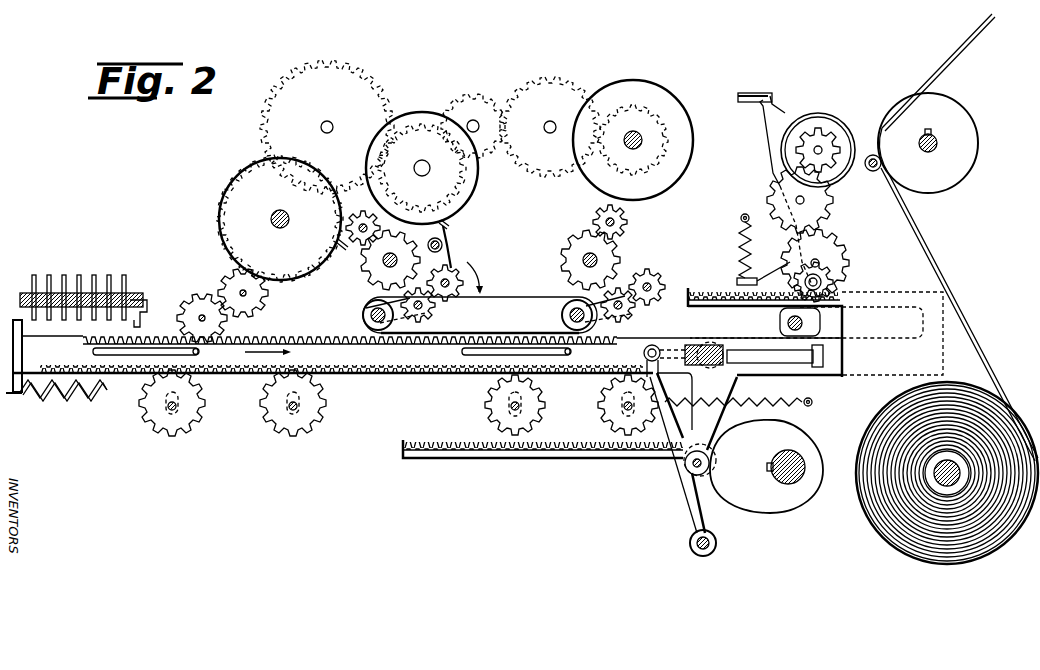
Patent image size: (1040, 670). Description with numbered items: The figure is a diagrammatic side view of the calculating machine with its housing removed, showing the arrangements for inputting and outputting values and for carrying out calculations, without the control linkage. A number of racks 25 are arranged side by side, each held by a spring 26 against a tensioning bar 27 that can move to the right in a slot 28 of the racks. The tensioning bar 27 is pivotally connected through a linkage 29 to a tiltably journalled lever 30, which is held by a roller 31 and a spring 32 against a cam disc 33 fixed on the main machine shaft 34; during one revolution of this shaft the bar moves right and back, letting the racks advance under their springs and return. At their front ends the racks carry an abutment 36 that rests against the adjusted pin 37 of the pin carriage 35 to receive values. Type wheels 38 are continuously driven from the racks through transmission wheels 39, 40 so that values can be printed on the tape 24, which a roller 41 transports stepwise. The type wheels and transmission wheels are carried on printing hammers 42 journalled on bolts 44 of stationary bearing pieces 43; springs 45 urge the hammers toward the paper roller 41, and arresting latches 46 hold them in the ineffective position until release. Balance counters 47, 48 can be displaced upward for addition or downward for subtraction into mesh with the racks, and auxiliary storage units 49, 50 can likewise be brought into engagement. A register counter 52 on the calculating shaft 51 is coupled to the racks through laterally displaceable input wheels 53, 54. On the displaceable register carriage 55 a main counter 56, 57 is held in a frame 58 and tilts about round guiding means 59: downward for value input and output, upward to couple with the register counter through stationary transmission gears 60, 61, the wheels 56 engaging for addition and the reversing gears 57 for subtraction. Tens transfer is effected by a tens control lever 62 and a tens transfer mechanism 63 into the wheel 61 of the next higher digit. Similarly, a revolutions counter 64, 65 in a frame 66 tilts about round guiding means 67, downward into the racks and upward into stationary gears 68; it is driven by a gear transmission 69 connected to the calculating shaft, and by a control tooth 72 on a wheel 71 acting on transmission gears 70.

The tape 24 is at (943, 62).
The racks 25 is at (380, 370).
The spring 26 is at (73, 397).
The tensioning bar 27 is at (716, 345).
The slot 28 is at (810, 366).
The linkage 29 is at (663, 345).
The lever 30 is at (685, 491).
The roller 31 is at (703, 480).
The spring 32 is at (791, 406).
The cam disc 33 is at (790, 506).
The main machine shaft 34 is at (806, 461).
The pin carriage 35 is at (63, 288).
The abutment 36 is at (15, 318).
The pin 37 is at (144, 300).
The type wheels 38 is at (833, 126).
The transmission wheel 39 is at (771, 195).
The transmission wheel 40 is at (846, 258).
The roller 41 is at (961, 137).
The printing hammers 42 is at (768, 126).
The bearing pieces 43 is at (788, 322).
The bolts 44 is at (836, 286).
The springs 45 is at (742, 241).
The arresting latches 46 is at (758, 92).
The balance counter 47 is at (492, 404).
The balance counter 48 is at (605, 404).
The auxiliary storage unit 49 is at (318, 403).
The auxiliary storage unit 50 is at (197, 403).
The calculating shaft 51 is at (272, 212).
The register counter 52 is at (253, 168).
The input wheel 53 is at (200, 300).
The input wheel 54 is at (265, 295).
The register carriage 55 is at (501, 300).
The main counter wheels 56 is at (436, 313).
The reversing gears 57 is at (450, 269).
The frame 58 is at (375, 301).
The round guiding means 59 is at (368, 316).
The transmission gear 60 is at (362, 264).
The transmission gear 61 is at (358, 214).
The tens control lever 62 is at (452, 245).
The tens transfer mechanism 63 is at (472, 186).
The revolutions counter gears 64 is at (632, 318).
The revolutions counter gears 65 is at (648, 270).
The frame 66 is at (601, 300).
The round guiding means 67 is at (568, 316).
The gears 68 is at (616, 254).
The gear transmission 69 is at (503, 100).
The transmission gears 70 is at (624, 219).
The wheel 71 is at (690, 164).
The control tooth 72 is at (598, 184).